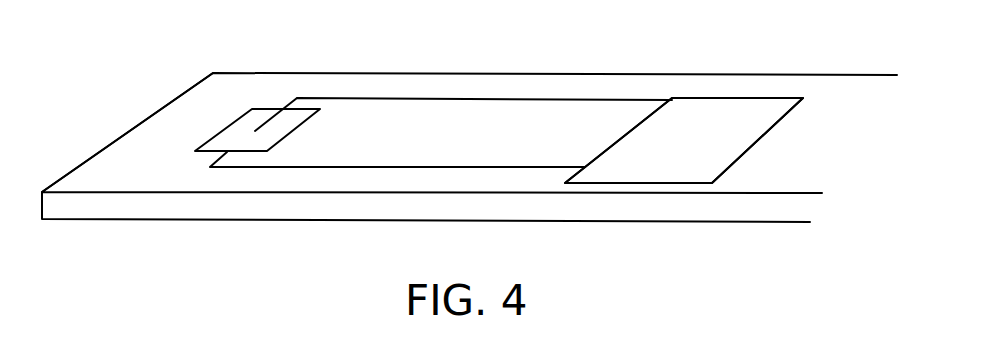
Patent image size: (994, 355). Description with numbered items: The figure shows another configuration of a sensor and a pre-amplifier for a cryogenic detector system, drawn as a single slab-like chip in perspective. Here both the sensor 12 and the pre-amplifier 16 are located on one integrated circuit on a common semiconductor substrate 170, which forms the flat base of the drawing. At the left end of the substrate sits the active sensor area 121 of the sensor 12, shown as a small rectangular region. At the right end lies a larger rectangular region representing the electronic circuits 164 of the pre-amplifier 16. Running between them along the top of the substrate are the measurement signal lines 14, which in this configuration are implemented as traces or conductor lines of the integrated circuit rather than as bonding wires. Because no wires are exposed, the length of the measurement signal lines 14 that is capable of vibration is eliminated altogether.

The sensor 12 is at (177, 128).
The measurement signal lines 14 is at (437, 100).
The pre-amplifier 16 is at (825, 147).
The active sensor area 121 is at (272, 113).
The electronic circuits 164 is at (702, 155).
The common semiconductor substrate 170 is at (224, 213).